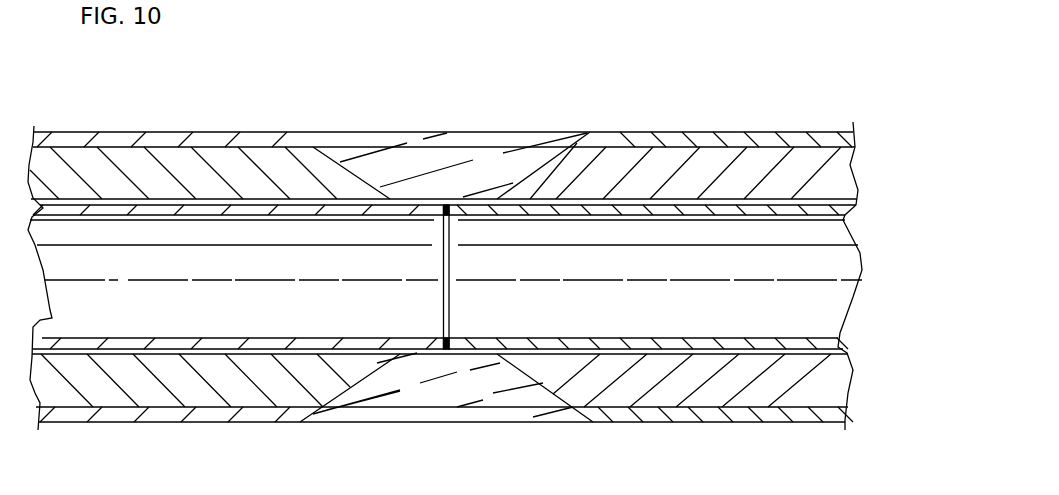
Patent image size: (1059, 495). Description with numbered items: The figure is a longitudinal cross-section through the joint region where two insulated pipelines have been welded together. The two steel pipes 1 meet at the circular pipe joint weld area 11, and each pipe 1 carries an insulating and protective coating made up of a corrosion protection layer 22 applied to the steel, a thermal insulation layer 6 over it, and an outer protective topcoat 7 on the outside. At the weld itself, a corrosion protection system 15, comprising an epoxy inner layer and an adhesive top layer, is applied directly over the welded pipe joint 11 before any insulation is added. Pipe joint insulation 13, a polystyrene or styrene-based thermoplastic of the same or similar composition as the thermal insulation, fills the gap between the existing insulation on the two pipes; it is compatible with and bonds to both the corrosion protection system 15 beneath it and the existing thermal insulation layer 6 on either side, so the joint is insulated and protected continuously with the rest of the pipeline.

The steel pipe 1 is at (245, 340).
The thermal insulation layer 6 is at (258, 170).
The outer protective topcoat 7 is at (744, 138).
The pipe joint weld area 11 is at (443, 313).
The pipe joint insulation layer 13 is at (418, 146).
The corrosion protection system 15 is at (480, 200).
The corrosion protection layer 22 is at (147, 200).